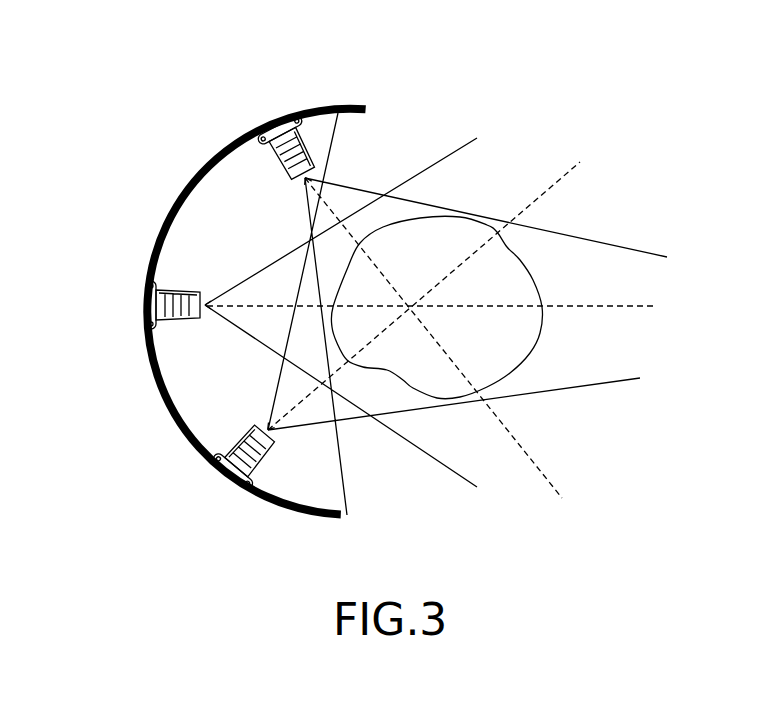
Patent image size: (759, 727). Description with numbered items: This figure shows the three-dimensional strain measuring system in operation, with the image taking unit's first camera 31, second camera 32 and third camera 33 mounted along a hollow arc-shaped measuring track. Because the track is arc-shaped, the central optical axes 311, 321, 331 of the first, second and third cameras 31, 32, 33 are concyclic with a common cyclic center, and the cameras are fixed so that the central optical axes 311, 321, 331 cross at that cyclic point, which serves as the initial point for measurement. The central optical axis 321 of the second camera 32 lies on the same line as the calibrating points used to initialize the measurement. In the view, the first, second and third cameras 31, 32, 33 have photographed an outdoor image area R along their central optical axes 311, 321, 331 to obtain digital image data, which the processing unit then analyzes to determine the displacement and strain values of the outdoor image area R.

The first camera 31 is at (273, 132).
The second camera 32 is at (148, 310).
The third camera 33 is at (228, 467).
The central optical axis of first camera 311 is at (547, 480).
The central optical axis of second camera 321 is at (613, 306).
The central optical axis of third camera 331 is at (570, 172).
The outdoor image area R is at (436, 307).